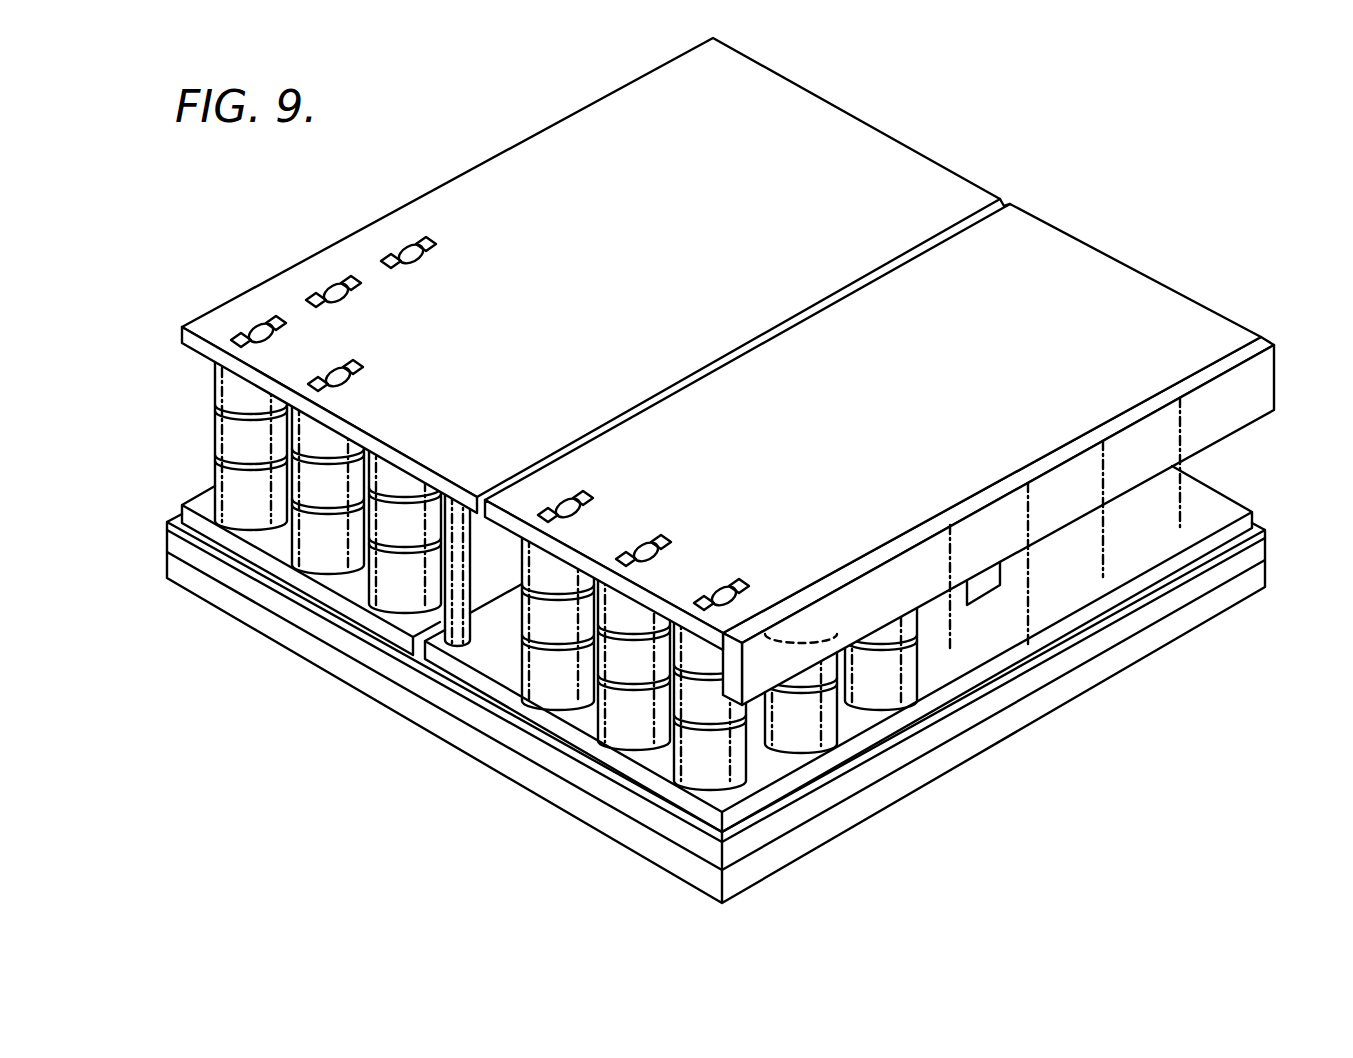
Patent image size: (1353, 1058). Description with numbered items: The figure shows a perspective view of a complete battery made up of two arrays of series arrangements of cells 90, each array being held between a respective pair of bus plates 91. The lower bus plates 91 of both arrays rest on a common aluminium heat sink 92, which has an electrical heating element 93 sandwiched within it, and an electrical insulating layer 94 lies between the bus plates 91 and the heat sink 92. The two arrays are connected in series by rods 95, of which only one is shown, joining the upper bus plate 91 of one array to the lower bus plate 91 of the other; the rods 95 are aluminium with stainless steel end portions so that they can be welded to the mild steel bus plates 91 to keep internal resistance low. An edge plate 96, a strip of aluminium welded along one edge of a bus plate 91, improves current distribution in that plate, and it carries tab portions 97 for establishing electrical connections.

The cells 90 is at (212, 400).
The bus plates 91 is at (198, 505).
The heat sink 92 is at (522, 757).
The electrical heating element 93 is at (212, 580).
The electrical insulating layer 94 is at (323, 620).
The rods 95 is at (470, 607).
The edge plate 96 is at (1240, 410).
The tab portions 97 is at (985, 587).